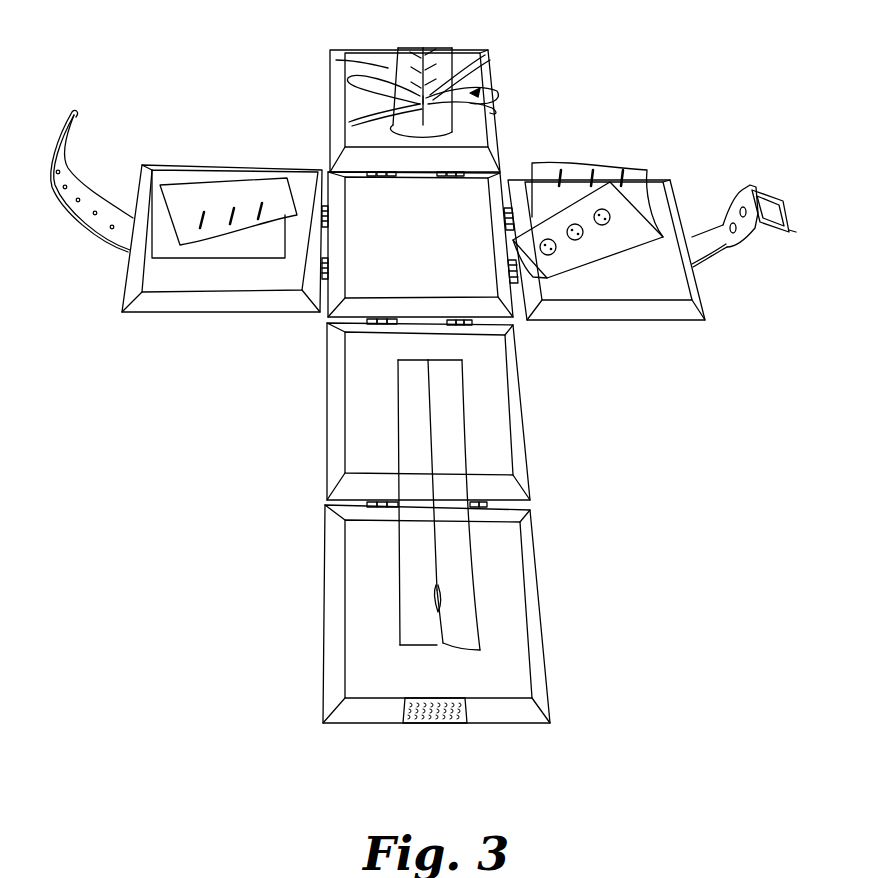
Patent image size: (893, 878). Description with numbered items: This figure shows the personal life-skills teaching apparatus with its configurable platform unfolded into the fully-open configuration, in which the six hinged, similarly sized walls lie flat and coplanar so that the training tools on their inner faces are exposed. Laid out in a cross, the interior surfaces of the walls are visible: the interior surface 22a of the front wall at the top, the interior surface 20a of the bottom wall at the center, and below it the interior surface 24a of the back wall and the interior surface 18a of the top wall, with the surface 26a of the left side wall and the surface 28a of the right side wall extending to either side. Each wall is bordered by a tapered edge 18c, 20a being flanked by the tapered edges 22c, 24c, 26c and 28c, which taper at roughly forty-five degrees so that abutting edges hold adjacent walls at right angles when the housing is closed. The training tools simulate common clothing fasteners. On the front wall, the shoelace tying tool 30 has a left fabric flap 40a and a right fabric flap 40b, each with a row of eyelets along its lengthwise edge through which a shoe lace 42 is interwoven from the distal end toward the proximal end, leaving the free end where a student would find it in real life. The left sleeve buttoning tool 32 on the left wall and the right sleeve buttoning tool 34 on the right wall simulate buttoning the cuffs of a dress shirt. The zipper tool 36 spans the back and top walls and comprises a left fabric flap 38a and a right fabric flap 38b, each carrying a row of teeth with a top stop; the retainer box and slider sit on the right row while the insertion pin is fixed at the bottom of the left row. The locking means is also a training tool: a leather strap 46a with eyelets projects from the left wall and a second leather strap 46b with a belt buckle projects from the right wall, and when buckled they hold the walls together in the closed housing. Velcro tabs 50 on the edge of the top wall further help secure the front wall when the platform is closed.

The interior surface of top wall 18a is at (505, 618).
The tapered edge of top wall 18c is at (537, 672).
The interior surface of bottom wall 20a is at (382, 270).
The interior surface of front wall 22a is at (470, 128).
The tapered edge of front wall 22c is at (487, 77).
The interior surface of back wall 24a is at (495, 427).
The tapered edge of back wall 24c is at (517, 465).
The surface of left side wall 26a is at (218, 273).
The tapered edge of left side wall 26c is at (152, 302).
The surface of right side wall 28a is at (650, 288).
The tapered edge of right side wall 28c is at (698, 295).
The shoelace tying tool 30 is at (388, 66).
The left sleeve buttoning tool 32 is at (220, 195).
The right sleeve buttoning tool 34 is at (643, 185).
The zipper tool 36 is at (403, 548).
The left fabric flap 38a is at (410, 607).
The right fabric flap 38b is at (452, 562).
The left fabric flap 40a is at (407, 62).
The right fabric flap 40b is at (442, 57).
The shoe lace 42 is at (455, 80).
The leather strap 46a is at (92, 217).
The second leather strap 46b is at (750, 188).
The Velcro tabs 50 is at (450, 723).